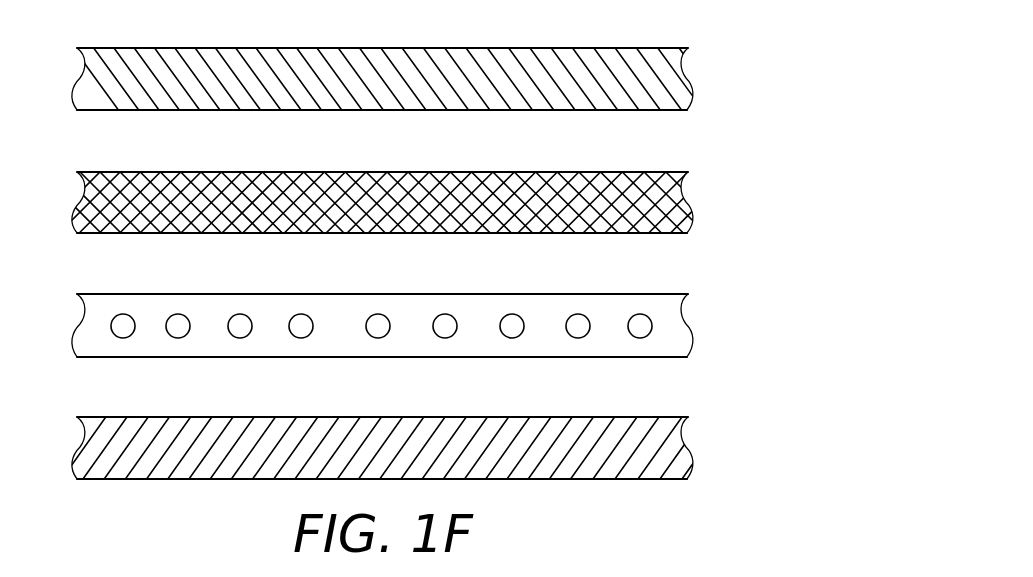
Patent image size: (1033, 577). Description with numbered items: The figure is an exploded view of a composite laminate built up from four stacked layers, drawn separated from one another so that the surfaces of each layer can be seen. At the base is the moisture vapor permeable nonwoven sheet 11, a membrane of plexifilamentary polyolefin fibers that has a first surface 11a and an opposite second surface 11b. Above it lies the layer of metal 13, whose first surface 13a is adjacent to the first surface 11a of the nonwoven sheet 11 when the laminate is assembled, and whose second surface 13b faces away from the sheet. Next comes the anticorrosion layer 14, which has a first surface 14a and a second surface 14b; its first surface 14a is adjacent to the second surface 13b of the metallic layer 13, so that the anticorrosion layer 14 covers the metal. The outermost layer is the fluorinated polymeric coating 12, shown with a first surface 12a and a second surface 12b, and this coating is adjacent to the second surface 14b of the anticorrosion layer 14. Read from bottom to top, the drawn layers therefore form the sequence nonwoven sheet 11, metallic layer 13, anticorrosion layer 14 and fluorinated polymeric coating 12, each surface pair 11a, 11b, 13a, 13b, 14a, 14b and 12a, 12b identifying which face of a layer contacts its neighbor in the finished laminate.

The moisture vapor permeable nonwoven sheet 11 is at (78, 446).
The first surface of the nonwoven sheet 11a is at (638, 417).
The second surface of the nonwoven sheet 11b is at (677, 479).
The fluorinated polymeric coating 12 is at (80, 78).
The first surface of the fluorinated polymeric coating 12a is at (683, 110).
The second surface of the fluorinated polymeric coating 12b is at (638, 48).
The layer of metal 13 is at (80, 323).
The first surface of the metallic layer 13a is at (680, 357).
The second surface of the metallic layer 13b is at (638, 294).
The anticorrosion layer 14 is at (78, 201).
The first surface of the anticorrosion layer 14a is at (683, 233).
The second surface of the anticorrosion layer 14b is at (638, 172).